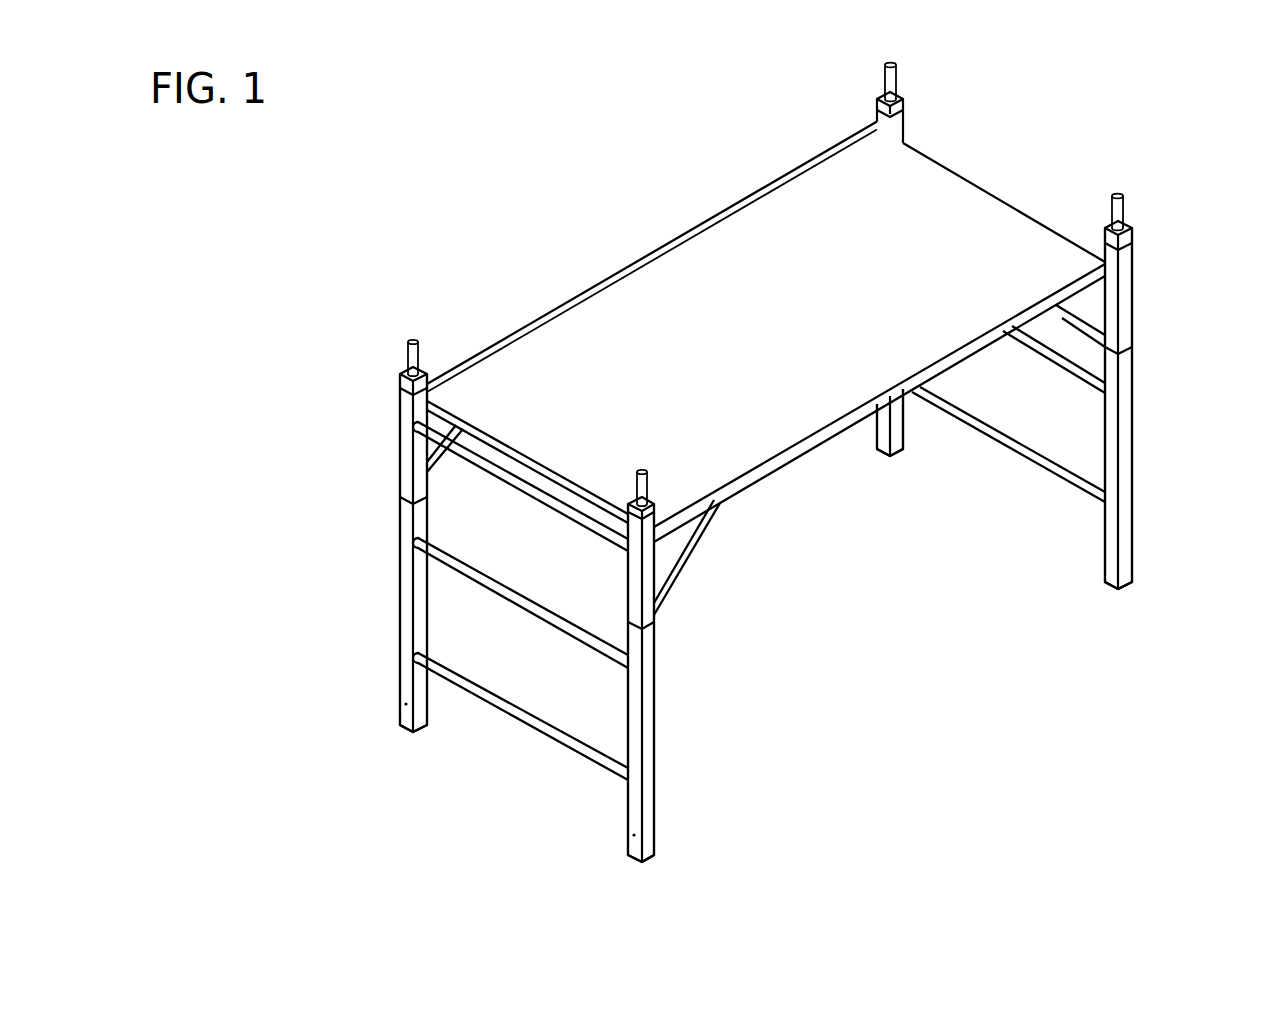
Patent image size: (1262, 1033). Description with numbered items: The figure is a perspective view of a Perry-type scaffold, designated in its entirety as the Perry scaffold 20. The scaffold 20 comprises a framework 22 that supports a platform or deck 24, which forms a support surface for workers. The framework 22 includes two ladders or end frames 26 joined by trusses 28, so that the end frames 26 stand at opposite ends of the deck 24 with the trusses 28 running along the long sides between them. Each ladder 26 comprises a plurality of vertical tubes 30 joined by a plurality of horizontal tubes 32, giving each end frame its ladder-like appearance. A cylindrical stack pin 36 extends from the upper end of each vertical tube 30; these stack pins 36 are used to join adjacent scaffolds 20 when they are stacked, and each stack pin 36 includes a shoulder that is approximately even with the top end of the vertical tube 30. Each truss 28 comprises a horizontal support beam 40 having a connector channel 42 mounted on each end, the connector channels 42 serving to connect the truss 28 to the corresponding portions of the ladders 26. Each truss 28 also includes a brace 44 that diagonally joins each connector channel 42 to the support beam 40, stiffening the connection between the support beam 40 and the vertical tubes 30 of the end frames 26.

The Perry-type scaffold 20 is at (466, 189).
The framework 22 is at (1054, 580).
The platform or deck 24 is at (698, 284).
The ladder or end frame 26 is at (1140, 540).
The truss 28 is at (577, 280).
The vertical tube 30 is at (1135, 450).
The horizontal tube 32 is at (1085, 375).
The stack pin 36 is at (900, 81).
The horizontal support beam 40 is at (757, 186).
The connector channel 42 is at (1135, 270).
The brace 44 is at (1093, 325).